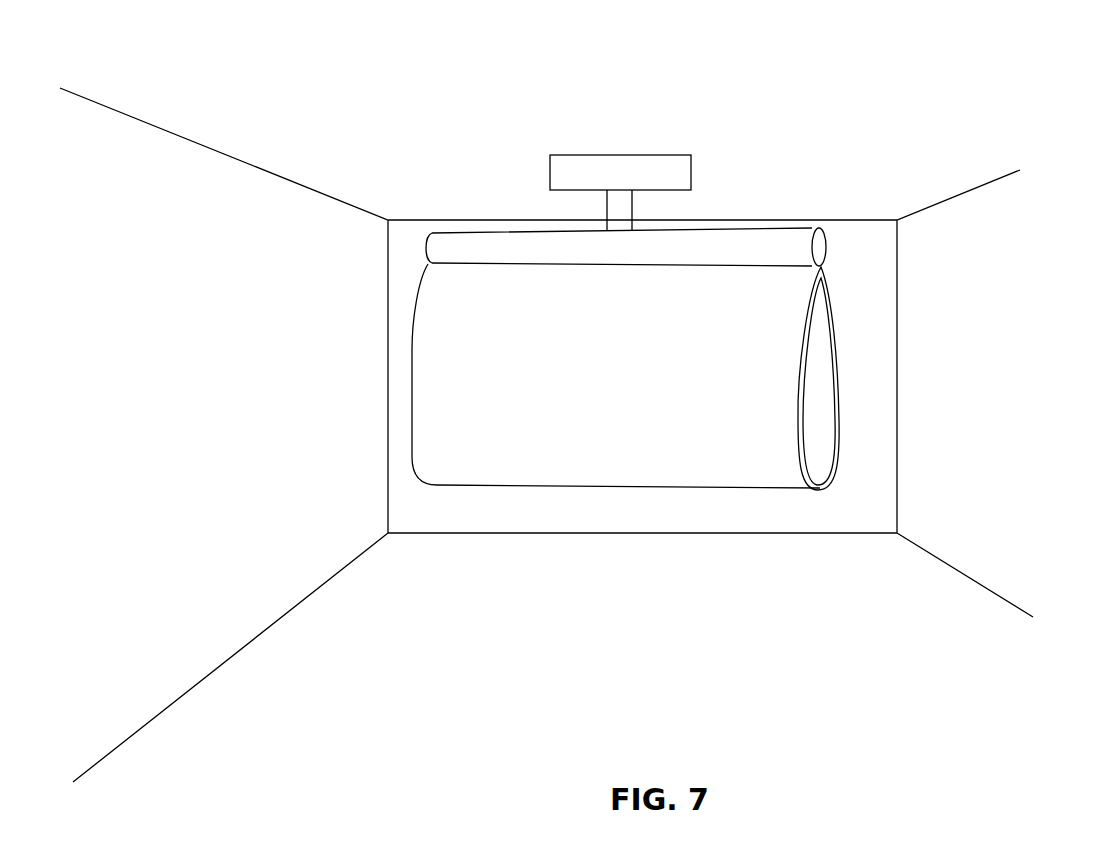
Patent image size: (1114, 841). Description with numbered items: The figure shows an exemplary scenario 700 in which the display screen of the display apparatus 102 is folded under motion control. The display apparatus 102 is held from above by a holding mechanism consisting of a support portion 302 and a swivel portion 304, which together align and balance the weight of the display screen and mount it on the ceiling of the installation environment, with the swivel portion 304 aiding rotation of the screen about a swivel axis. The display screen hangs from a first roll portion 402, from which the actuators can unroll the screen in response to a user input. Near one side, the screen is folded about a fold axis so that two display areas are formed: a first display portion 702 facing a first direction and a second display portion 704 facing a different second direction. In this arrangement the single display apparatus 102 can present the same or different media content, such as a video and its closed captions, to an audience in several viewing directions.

The exemplary scenario 700 is at (1021, 77).
The display apparatus 102 is at (452, 233).
The support portion 302 is at (550, 166).
The swivel portion 304 is at (634, 209).
The first roll portion 402 is at (827, 246).
The first display portion 702 is at (777, 363).
The second display portion 704 is at (840, 428).